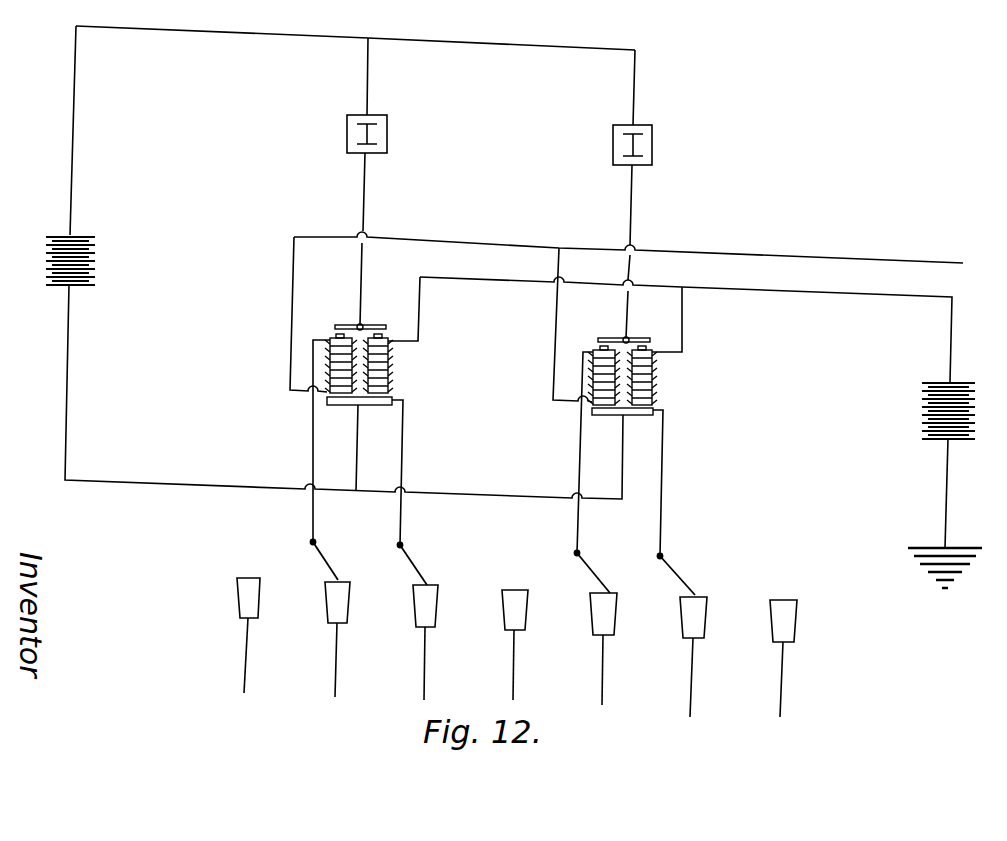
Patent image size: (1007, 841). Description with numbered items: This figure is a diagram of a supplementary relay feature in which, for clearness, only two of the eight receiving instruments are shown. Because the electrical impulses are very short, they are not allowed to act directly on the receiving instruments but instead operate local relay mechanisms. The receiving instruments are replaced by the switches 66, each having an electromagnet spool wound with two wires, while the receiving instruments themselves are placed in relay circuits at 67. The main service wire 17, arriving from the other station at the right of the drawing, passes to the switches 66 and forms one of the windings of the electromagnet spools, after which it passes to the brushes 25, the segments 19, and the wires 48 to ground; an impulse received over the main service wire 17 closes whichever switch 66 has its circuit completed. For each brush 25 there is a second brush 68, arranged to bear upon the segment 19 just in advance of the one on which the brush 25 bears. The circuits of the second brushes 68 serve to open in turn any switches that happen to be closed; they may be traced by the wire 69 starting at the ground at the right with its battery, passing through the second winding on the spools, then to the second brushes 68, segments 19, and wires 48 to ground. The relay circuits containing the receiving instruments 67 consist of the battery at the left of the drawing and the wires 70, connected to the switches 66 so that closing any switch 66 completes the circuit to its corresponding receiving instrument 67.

The relay circuit wires 70 is at (74, 177).
The receiving instrument 67 is at (387, 140).
The main service wire 17 is at (963, 263).
The wire 69 is at (418, 318).
The switch 66 is at (392, 372).
The second brush 68 is at (325, 562).
The brush 25 is at (415, 567).
The segment 19 is at (517, 610).
The wire 48 is at (246, 652).